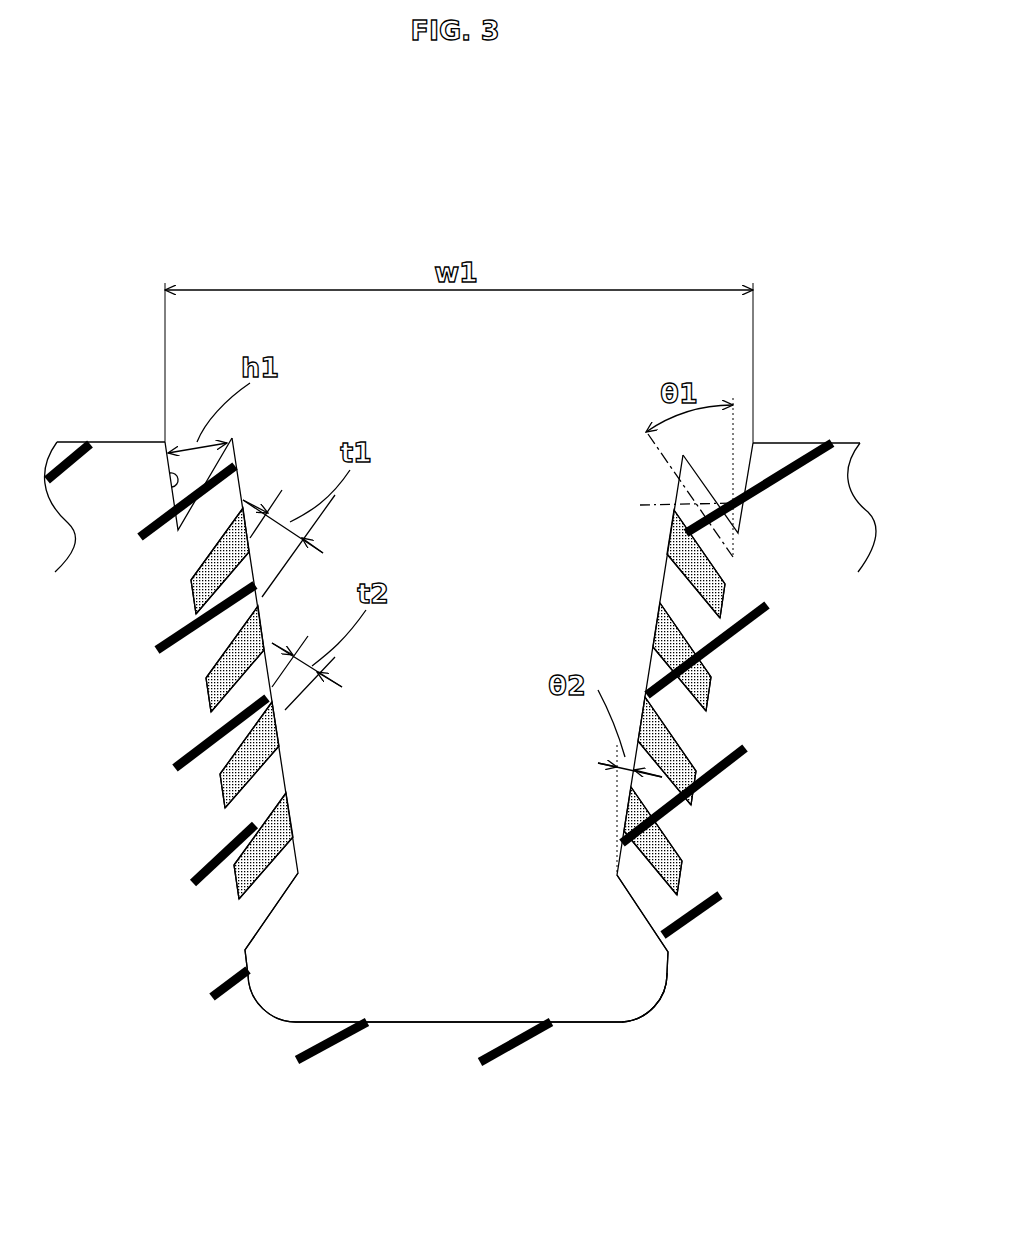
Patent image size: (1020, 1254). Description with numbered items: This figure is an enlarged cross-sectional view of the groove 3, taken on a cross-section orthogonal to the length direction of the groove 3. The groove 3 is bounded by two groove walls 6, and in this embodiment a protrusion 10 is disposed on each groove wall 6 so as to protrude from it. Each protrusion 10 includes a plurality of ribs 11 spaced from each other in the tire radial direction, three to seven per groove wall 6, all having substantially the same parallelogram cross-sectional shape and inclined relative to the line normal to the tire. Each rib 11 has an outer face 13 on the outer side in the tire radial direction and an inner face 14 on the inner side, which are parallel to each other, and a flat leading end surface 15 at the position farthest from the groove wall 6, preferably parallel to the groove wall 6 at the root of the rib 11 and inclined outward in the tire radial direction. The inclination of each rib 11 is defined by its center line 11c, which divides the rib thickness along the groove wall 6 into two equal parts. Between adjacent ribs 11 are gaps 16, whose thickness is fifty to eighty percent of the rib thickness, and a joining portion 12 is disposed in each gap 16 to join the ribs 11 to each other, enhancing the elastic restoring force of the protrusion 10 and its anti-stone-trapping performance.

The groove 3 is at (113, 420).
The groove wall 6 is at (128, 507).
The protrusion 10 is at (280, 595).
The rib 11 is at (207, 532).
The center line 11c is at (677, 509).
The joining portion 12 is at (212, 588).
The outer face 13 is at (294, 794).
The inner face 14 is at (275, 908).
The leading end surface 15 is at (241, 500).
The gap 16 is at (243, 746).